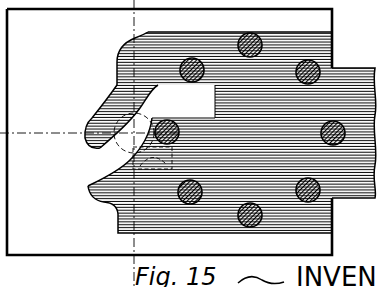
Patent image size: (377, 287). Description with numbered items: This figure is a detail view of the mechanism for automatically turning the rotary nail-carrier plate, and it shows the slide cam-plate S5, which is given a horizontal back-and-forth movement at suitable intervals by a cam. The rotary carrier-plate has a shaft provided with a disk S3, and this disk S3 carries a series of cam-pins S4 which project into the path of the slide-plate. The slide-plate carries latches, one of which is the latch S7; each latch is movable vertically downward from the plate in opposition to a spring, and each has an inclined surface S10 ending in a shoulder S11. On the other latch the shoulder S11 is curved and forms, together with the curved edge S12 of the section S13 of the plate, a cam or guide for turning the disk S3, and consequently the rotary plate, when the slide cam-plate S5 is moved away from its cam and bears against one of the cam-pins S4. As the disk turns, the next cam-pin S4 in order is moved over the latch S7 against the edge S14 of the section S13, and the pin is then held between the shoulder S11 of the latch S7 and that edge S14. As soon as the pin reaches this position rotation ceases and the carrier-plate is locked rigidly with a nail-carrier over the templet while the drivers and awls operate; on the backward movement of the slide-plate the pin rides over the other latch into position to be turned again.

The slide cam-plate S5 is at (34, 116).
The latch S7 is at (128, 168).
The curved edge S12 is at (115, 83).
The shoulder S11 is at (178, 110).
The inclined surface S10 is at (146, 238).
The section of the plate S13 is at (193, 114).
The cam-pins S4 is at (252, 237).
The disk S3 is at (113, 140).
The edge S14 is at (205, 120).